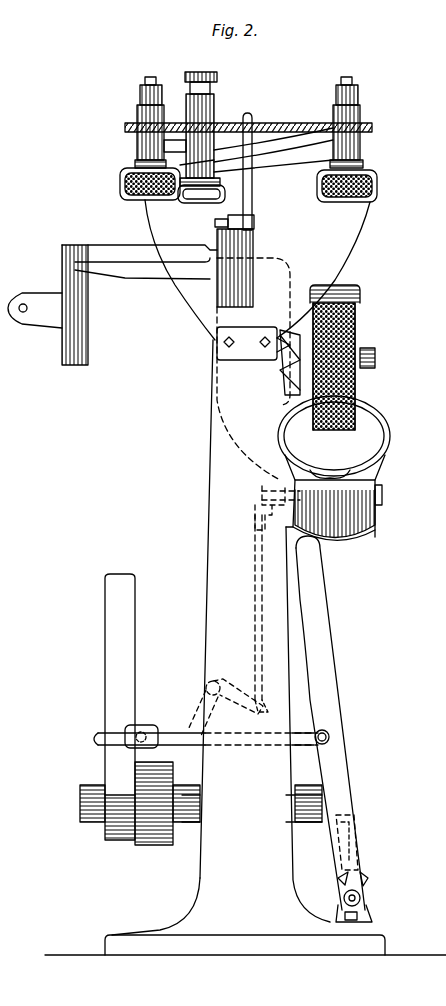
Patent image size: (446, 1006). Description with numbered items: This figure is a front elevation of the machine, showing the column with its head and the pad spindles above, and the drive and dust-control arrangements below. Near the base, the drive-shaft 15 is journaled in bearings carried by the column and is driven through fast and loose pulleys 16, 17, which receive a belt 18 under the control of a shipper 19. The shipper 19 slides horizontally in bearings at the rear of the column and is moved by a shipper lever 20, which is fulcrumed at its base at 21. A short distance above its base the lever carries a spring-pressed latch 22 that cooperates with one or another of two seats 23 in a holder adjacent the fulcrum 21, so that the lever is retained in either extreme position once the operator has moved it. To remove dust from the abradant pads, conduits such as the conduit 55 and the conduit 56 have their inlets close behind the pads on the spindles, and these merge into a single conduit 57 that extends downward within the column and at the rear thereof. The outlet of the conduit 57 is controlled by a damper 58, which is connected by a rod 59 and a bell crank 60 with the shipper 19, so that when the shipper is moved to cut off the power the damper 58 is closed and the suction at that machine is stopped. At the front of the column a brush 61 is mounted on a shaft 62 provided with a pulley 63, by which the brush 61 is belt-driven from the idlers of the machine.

The drive-shaft 15 is at (92, 803).
The fast pulley 16 is at (160, 843).
The loose pulley 17 is at (107, 838).
The belt 18 is at (115, 650).
The shipper 19 is at (105, 740).
The shipper lever 20 is at (352, 770).
The fulcrum 21 is at (362, 900).
The spring-pressed latch 22 is at (352, 868).
The seats 23 is at (338, 882).
The conduit 55 is at (358, 222).
The conduit 56 is at (226, 198).
The single conduit 57 is at (232, 370).
The damper 58 is at (370, 520).
The rod 59 is at (256, 592).
The bell crank 60 is at (198, 732).
The brush 61 is at (340, 340).
The shaft 62 is at (378, 360).
The pulley 63 is at (358, 305).